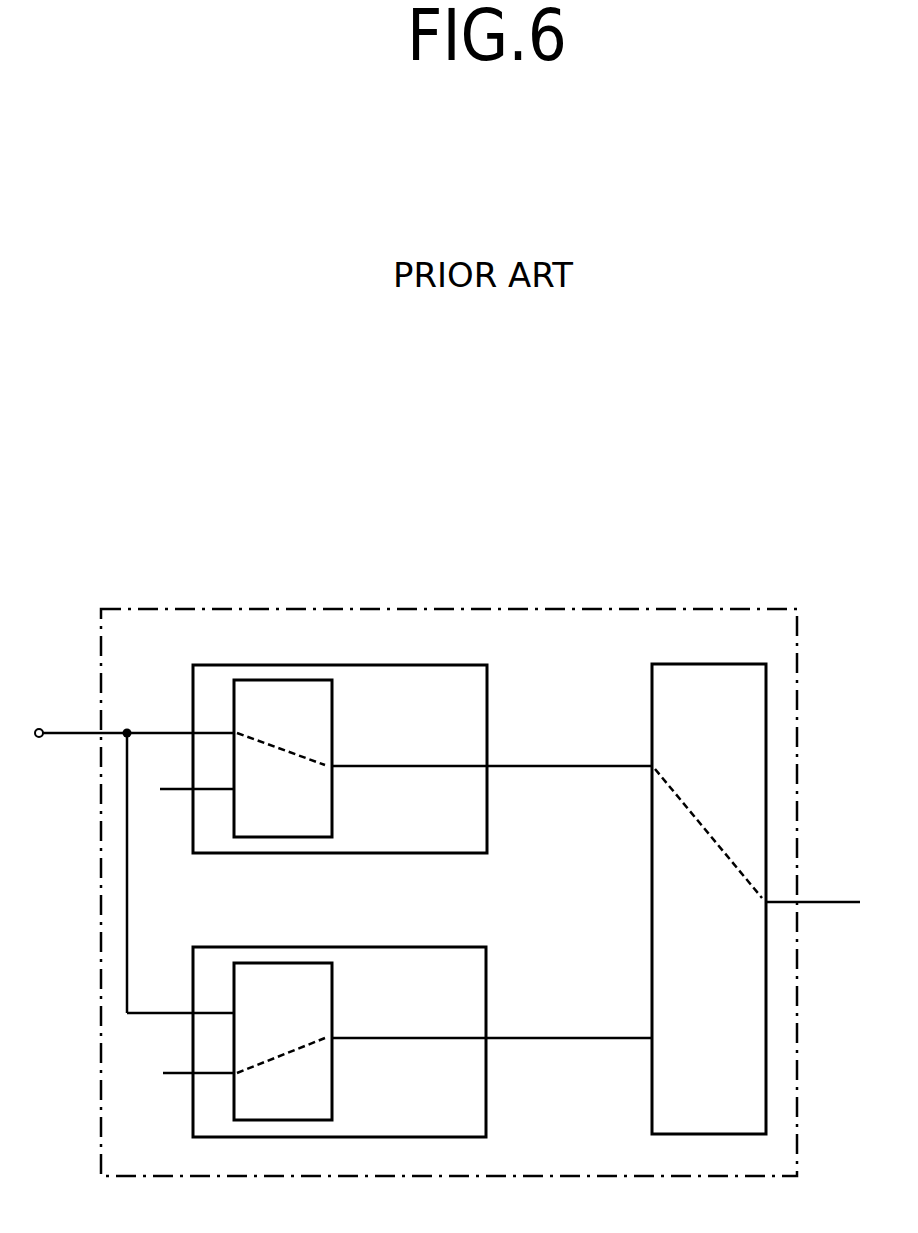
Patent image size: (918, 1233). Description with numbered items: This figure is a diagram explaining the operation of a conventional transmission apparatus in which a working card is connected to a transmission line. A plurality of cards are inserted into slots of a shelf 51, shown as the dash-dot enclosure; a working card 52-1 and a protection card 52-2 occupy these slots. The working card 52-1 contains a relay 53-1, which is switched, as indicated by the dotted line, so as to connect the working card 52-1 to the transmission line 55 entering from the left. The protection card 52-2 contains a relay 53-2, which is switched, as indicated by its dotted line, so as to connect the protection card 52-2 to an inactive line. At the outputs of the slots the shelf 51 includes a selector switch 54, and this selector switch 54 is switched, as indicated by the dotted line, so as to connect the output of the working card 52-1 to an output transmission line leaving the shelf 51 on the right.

The shelf 51 is at (422, 609).
The working card 52-1 is at (340, 739).
The relay 53-1 is at (331, 758).
The protection card 52-2 is at (339, 1022).
The relay 53-2 is at (331, 1041).
The selector switch 54 is at (709, 877).
The transmission line 55 is at (128, 851).